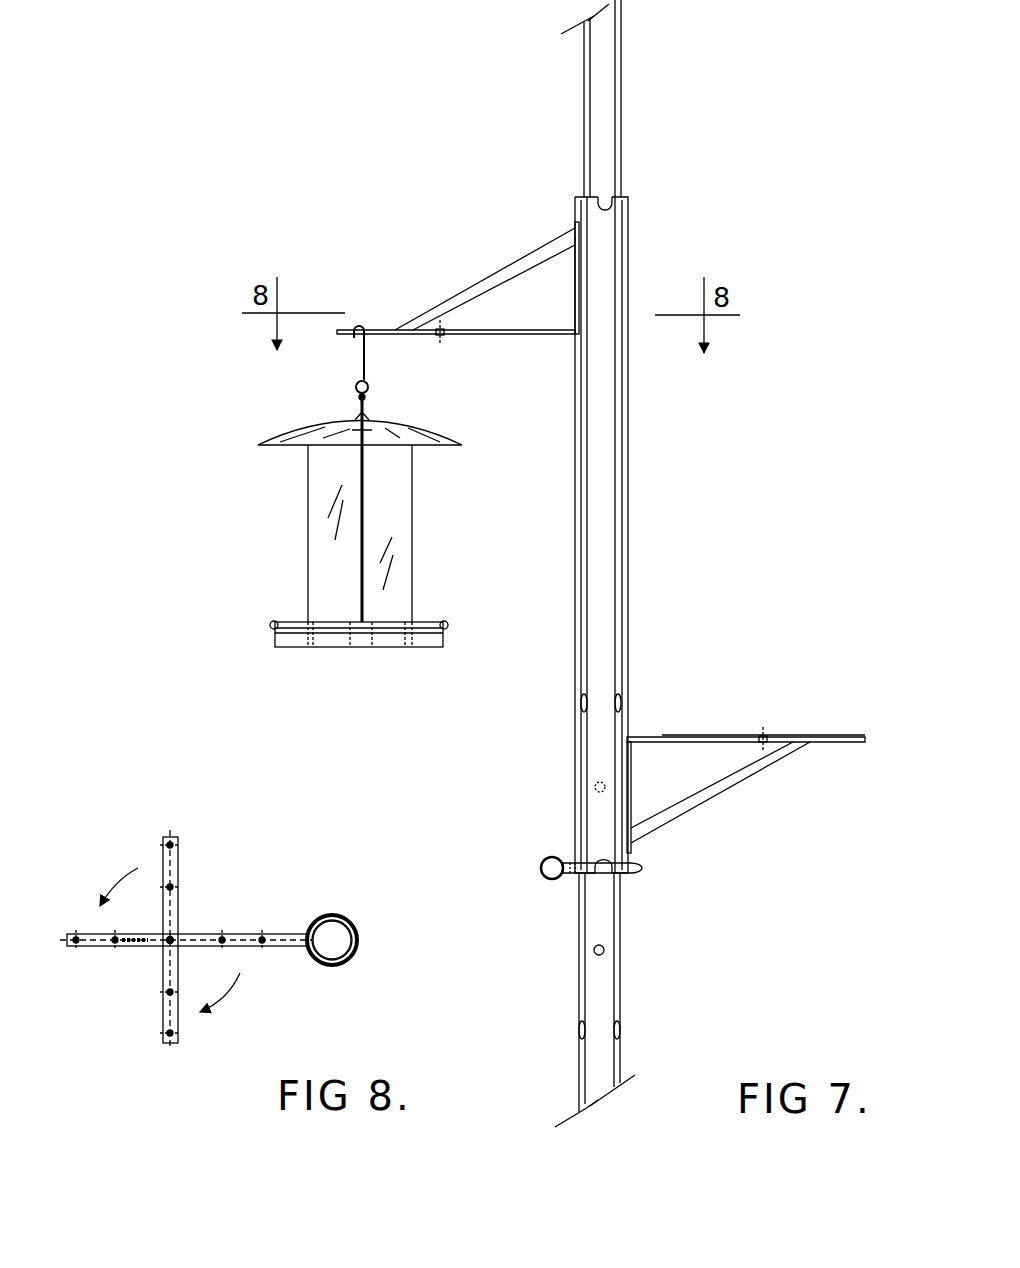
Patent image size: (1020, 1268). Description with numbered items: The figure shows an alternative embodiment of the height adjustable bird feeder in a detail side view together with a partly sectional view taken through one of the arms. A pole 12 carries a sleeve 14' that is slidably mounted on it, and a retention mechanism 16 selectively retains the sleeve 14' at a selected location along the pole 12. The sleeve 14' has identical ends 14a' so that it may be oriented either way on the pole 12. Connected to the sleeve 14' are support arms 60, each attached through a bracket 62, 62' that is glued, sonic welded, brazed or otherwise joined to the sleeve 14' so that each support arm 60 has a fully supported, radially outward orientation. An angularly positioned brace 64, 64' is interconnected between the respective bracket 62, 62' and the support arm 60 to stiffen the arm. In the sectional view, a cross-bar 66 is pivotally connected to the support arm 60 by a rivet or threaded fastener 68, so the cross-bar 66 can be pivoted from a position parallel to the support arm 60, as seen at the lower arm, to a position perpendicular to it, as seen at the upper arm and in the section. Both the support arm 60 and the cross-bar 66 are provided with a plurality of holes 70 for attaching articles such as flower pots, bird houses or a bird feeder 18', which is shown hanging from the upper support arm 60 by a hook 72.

In FIG. 7, the pole 12 is at (652, 100).
In FIG. 8, the pole 12 is at (345, 970).
In FIG. 7, the sleeve 14' is at (672, 535).
In FIG. 8, the sleeve 14' is at (363, 890).
In FIG. 7, the identical ends 14a' is at (680, 543).
In FIG. 7, the retention mechanism 16 is at (561, 890).
In FIG. 7, the bird feeder 18' is at (292, 523).
In FIG. 7, the support arm 60 is at (382, 327).
In FIG. 8, the support arm 60 is at (250, 947).
In FIG. 7, the bracket 62 is at (532, 235).
In FIG. 7, the bracket 62' is at (684, 819).
In FIG. 7, the brace 64 is at (485, 256).
In FIG. 8, the brace 64 is at (95, 901).
In FIG. 7, the brace 64' is at (727, 808).
In FIG. 8, the cross-bar 66 is at (177, 1022).
In FIG. 8, the rivet or threaded fastener 68 is at (173, 935).
In FIG. 8, the holes 70 is at (177, 887).
In FIG. 7, the hook 72 is at (356, 363).